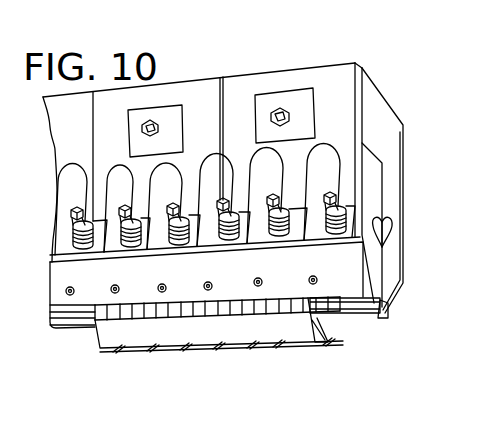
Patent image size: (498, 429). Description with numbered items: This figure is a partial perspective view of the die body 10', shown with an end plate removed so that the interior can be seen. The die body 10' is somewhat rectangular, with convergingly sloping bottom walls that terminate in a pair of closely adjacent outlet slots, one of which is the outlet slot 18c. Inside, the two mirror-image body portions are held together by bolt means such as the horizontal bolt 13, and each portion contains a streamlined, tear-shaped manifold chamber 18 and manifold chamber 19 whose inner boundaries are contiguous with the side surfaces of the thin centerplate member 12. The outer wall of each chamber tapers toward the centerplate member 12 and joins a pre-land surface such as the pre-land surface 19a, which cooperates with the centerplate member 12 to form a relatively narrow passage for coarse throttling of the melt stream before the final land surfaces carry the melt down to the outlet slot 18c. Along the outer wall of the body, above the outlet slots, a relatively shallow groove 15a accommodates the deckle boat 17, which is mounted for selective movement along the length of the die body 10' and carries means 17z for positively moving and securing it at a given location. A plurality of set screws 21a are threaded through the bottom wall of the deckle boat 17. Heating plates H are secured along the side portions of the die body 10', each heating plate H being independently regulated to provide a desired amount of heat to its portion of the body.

The die body 10' is at (242, 188).
The heating plate H is at (361, 62).
The centerplate member 12 is at (380, 212).
The horizontal bolt 13 is at (271, 117).
The groove 15a is at (350, 298).
The deckle boat 17 is at (268, 348).
The means for positively moving and securing 17z is at (225, 298).
The manifold chamber 18 is at (390, 239).
The outlet slot 18c is at (388, 316).
The manifold chamber 19 is at (385, 232).
The pre-land surface 19a is at (377, 316).
The set screw 21a is at (240, 348).